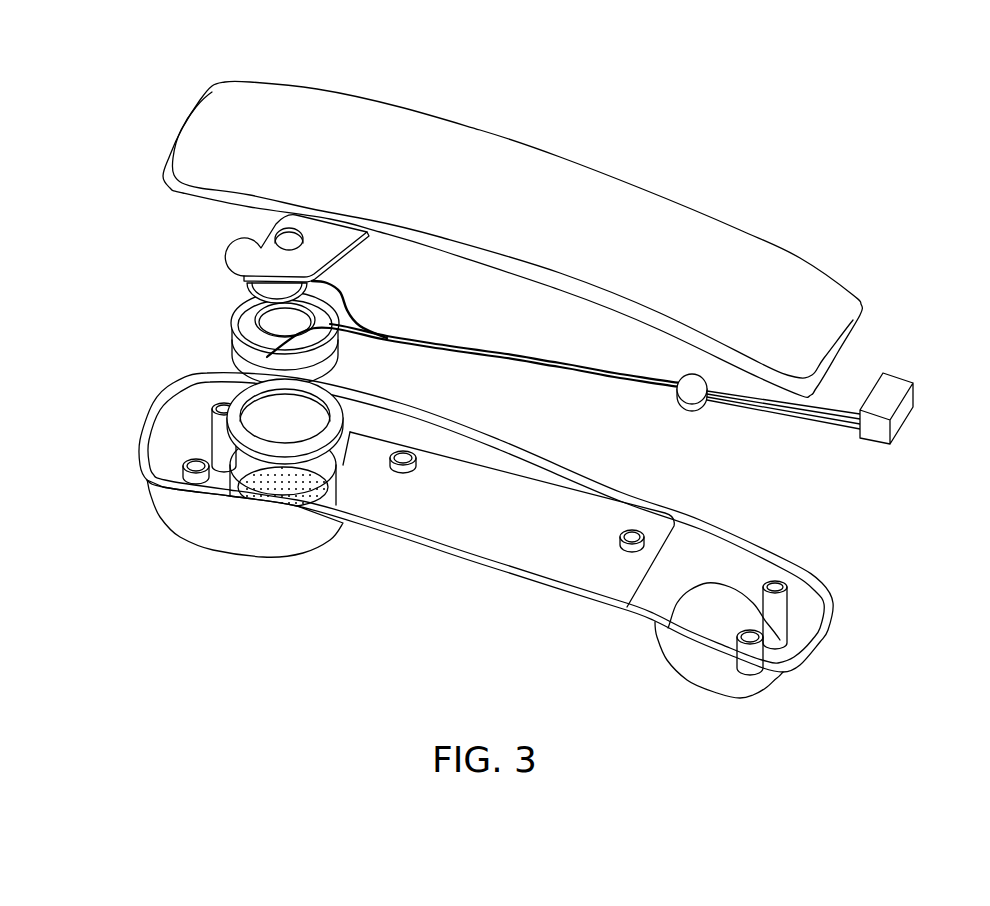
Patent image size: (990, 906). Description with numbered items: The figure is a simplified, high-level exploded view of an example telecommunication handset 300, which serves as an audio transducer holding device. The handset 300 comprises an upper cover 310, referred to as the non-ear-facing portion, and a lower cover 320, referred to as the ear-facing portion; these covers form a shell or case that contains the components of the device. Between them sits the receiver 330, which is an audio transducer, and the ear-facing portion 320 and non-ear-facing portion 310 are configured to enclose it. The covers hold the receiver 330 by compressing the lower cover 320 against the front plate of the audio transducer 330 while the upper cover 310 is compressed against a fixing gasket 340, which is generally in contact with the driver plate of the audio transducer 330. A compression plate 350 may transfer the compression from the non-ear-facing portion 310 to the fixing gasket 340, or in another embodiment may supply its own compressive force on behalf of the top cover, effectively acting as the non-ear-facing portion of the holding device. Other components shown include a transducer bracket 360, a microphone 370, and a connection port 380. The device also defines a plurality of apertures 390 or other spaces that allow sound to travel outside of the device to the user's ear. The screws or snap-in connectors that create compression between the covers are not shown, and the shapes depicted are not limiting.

The handset 300 is at (558, 373).
The upper cover 310 is at (648, 208).
The lower cover 320 is at (298, 562).
The receiver 330 is at (227, 347).
The fixing gasket 340 is at (241, 291).
The compression plate 350 is at (237, 251).
The transducer bracket 360 is at (337, 385).
The microphone 370 is at (694, 410).
The connection port 380 is at (897, 375).
The apertures 390 is at (312, 497).